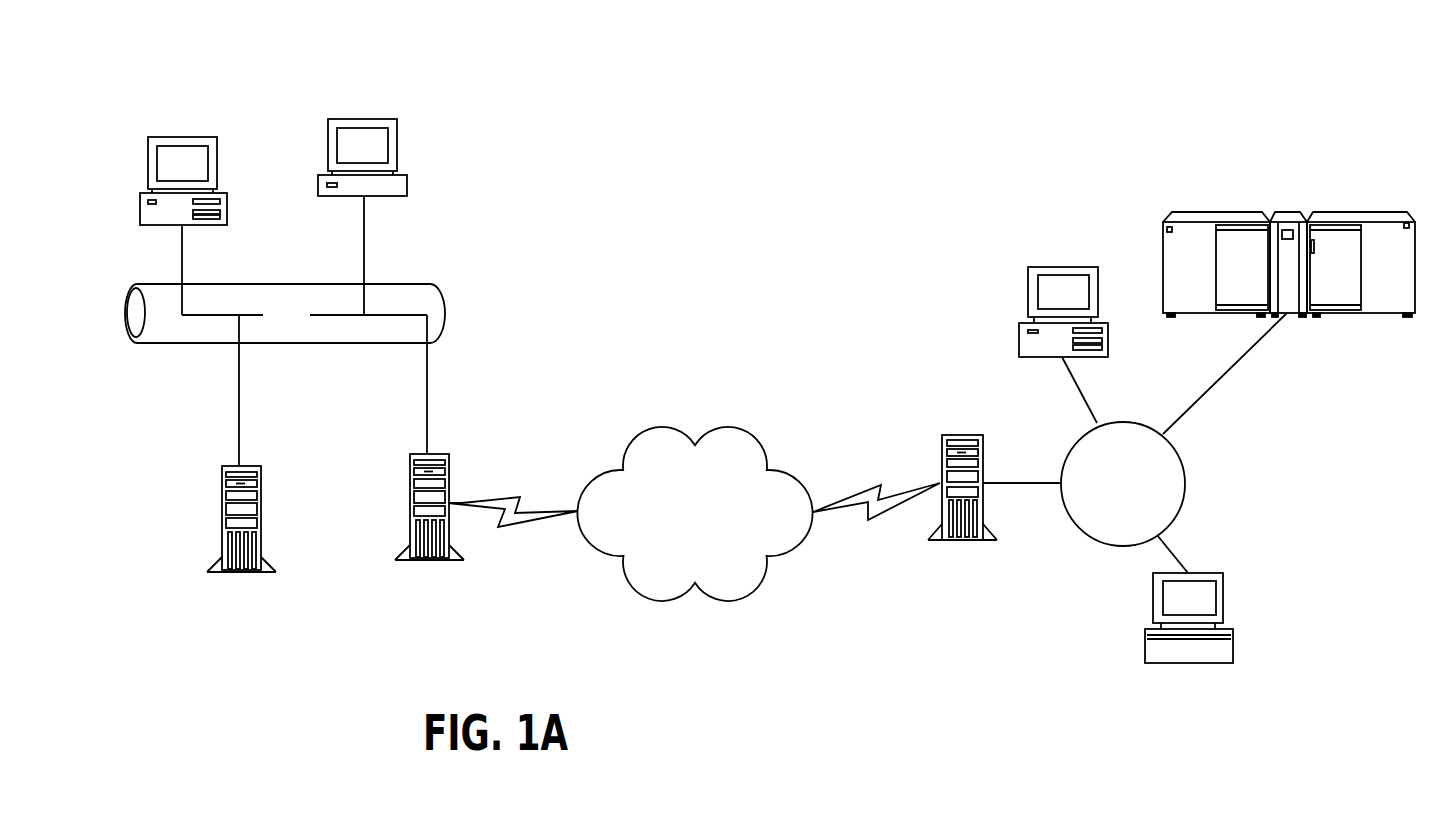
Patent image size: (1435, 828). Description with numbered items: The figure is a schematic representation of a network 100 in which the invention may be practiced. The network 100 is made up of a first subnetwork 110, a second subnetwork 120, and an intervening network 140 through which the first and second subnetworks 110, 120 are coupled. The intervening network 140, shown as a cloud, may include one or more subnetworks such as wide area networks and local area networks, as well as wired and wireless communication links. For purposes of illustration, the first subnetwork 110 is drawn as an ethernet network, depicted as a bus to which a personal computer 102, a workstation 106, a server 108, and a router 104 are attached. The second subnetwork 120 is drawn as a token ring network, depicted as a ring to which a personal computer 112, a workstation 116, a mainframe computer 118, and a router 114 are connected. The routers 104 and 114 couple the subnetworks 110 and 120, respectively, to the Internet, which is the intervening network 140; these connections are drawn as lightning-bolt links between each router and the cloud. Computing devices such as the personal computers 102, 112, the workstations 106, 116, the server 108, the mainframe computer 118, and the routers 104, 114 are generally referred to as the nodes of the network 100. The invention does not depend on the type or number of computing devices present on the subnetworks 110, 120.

The network 100 is at (1174, 72).
The personal computer 102 is at (200, 137).
The router 104 is at (410, 507).
The workstation 106 is at (385, 119).
The server 108 is at (222, 513).
The first subnetwork 110 is at (285, 331).
The personal computer 112 is at (1042, 267).
The router 114 is at (967, 542).
The workstation 116 is at (1223, 595).
The mainframe computer 118 is at (1343, 313).
The second subnetwork 120 is at (1141, 498).
The intervening network 140 is at (714, 526).